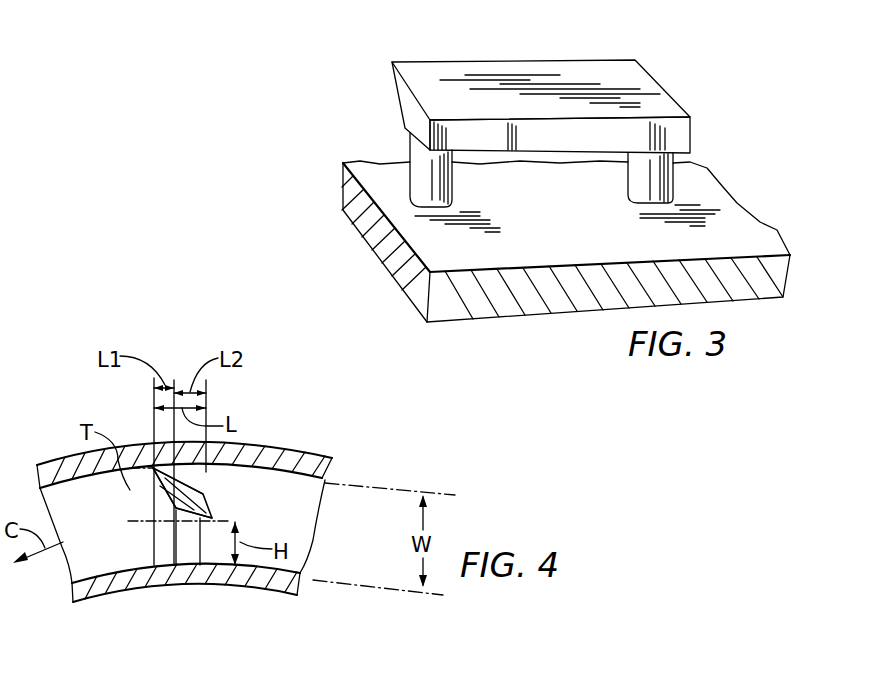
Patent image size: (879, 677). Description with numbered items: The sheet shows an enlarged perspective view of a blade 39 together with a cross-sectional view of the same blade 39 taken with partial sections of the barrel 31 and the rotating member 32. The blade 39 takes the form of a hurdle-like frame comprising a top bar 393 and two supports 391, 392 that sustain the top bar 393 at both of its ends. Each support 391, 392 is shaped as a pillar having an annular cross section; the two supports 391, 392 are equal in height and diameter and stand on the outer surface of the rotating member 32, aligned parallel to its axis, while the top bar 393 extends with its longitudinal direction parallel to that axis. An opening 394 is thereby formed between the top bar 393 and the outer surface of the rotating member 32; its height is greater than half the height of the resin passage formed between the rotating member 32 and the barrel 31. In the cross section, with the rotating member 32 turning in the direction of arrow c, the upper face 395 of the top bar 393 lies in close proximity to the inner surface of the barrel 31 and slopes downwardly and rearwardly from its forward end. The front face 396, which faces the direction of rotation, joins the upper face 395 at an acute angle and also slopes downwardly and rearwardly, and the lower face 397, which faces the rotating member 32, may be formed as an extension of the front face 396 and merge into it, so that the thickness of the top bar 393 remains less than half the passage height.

In FIG. 4, the barrel 31 is at (255, 449).
In FIG. 3, the rotating member 32 is at (540, 252).
In FIG. 4, the rotating member 32 is at (120, 582).
In FIG. 3, the blade 39 is at (547, 78).
In FIG. 3, the support 391 is at (423, 170).
In FIG. 4, the support 391 is at (193, 545).
In FIG. 3, the support 392 is at (670, 175).
In FIG. 3, the top bar 393 is at (487, 72).
In FIG. 4, the top bar 393 is at (135, 473).
In FIG. 3, the opening 394 is at (590, 142).
In FIG. 4, the opening 394 is at (168, 540).
In FIG. 4, the upper face 395 is at (176, 480).
In FIG. 4, the front face 396 is at (165, 505).
In FIG. 4, the lower face 397 is at (232, 530).